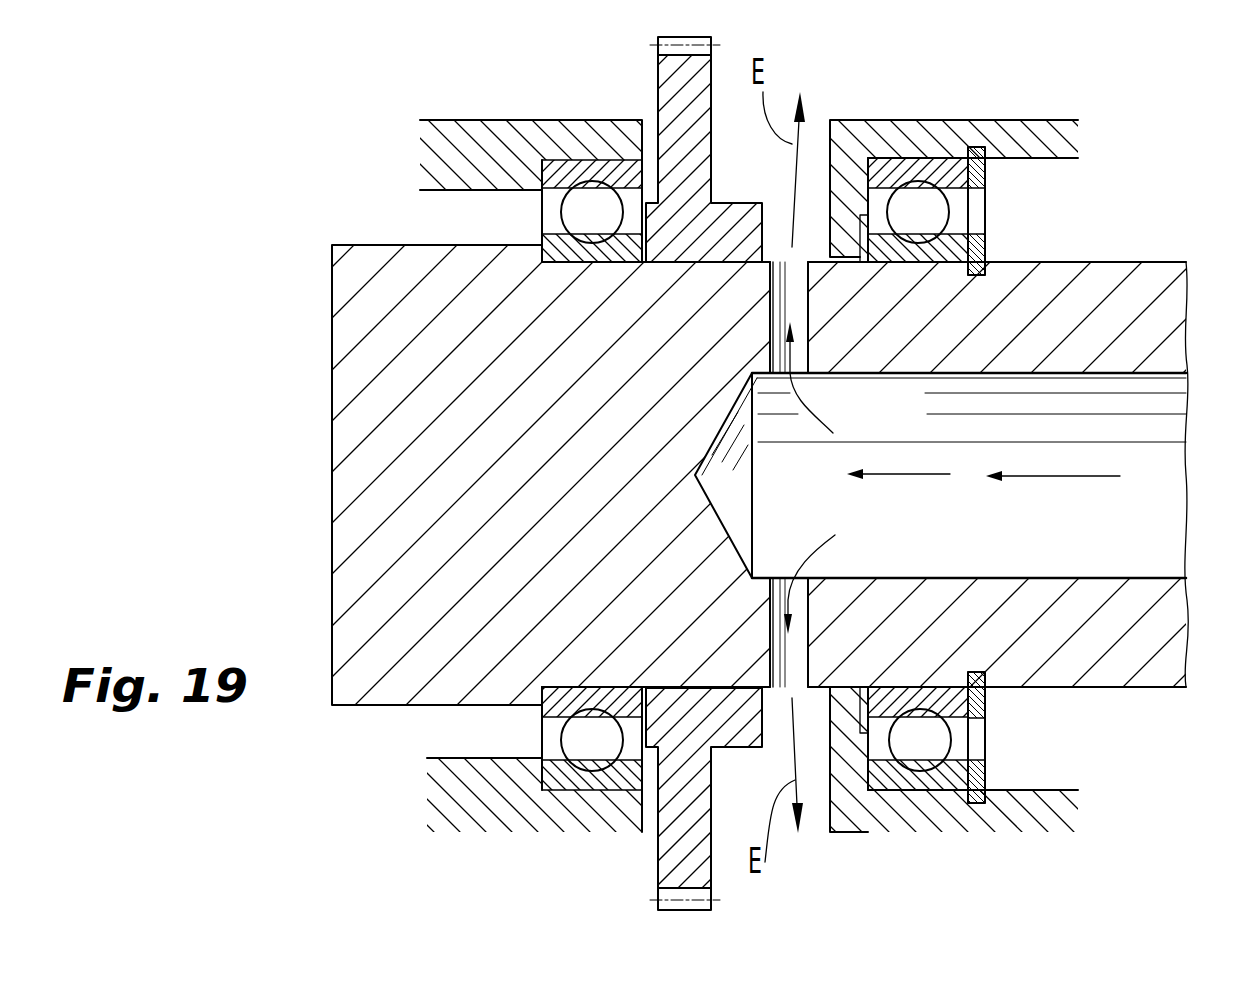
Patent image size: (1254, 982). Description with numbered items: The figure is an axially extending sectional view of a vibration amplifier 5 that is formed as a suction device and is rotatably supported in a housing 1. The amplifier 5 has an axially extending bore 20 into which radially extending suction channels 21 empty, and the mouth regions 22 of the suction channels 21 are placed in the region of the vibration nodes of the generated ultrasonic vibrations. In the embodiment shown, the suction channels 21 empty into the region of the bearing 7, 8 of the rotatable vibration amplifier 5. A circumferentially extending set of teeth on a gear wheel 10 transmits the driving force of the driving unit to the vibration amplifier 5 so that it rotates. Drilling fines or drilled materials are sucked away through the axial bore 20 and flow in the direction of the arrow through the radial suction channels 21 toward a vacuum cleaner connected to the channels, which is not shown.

The housing 1 is at (468, 132).
The vibration amplifier 5 is at (340, 383).
The bearing 7 is at (915, 745).
The bearing 8 is at (590, 748).
The gear wheel 10 is at (670, 72).
The axially extending bore 20 is at (1154, 420).
The suction channels 21 is at (803, 322).
The mouth regions 22 is at (791, 374).